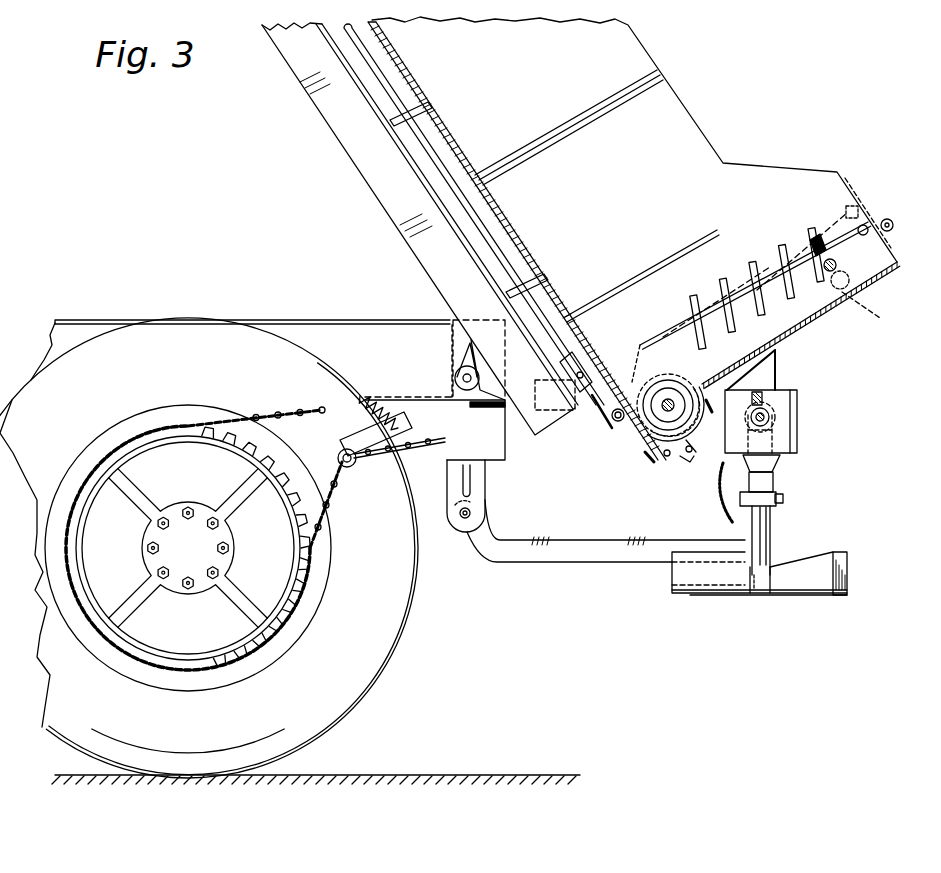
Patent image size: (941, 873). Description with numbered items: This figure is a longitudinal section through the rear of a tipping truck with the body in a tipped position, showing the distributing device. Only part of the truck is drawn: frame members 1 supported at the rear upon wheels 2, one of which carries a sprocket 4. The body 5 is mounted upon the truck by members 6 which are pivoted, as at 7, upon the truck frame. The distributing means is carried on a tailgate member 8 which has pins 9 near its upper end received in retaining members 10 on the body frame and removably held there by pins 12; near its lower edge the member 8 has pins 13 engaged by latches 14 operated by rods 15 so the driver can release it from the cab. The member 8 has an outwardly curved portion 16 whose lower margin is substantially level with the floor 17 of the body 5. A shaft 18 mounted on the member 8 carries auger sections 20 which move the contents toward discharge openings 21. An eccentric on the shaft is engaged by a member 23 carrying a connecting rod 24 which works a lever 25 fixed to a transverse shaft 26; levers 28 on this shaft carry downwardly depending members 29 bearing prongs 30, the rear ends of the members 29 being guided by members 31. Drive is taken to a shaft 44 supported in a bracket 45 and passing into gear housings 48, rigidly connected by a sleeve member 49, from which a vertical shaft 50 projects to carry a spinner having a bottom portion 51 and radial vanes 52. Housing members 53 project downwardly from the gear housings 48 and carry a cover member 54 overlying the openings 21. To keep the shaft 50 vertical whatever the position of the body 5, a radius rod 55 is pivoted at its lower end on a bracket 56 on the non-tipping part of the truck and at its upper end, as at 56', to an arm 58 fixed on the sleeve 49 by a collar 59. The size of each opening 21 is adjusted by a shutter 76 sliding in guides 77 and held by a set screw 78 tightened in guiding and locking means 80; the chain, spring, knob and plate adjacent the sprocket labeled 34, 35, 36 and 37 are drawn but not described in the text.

The frame members 1 is at (316, 320).
The wheels 2 is at (390, 668).
The sprocket 4 is at (280, 462).
The body 5 is at (683, 122).
The members 6 is at (458, 356).
The pivot 7 is at (455, 378).
The member 8 is at (831, 305).
The pins 9 is at (861, 228).
The retaining members 10 is at (891, 242).
The pins 12 is at (894, 222).
The pins 13 is at (605, 425).
The latches 14 is at (622, 432).
The rods 15 is at (442, 175).
The curved portion 16 is at (685, 460).
The floor 17 is at (441, 125).
The shaft 18 is at (660, 398).
The auger sections 20 is at (650, 396).
The discharge openings 21 is at (663, 452).
The member 23 is at (641, 433).
The connecting rod 24 is at (880, 318).
The lever 25 is at (850, 295).
The shaft 26 is at (836, 267).
The levers 28 is at (826, 244).
The members 29 is at (777, 263).
The prongs 30 is at (722, 280).
The members 31 is at (673, 332).
The drive chain 34 is at (268, 412).
The plate 35 is at (387, 493).
The adjusting knob 36 is at (346, 468).
The spring 37 is at (396, 392).
The shaft 44 is at (770, 415).
The bracket 45 is at (777, 372).
The gear housings 48 is at (797, 424).
The member 49 is at (770, 398).
The vertical shaft 50 is at (770, 522).
The bottom portion 51 is at (810, 594).
The vanes 52 is at (847, 562).
The housing members 53 is at (778, 462).
The cover member 54 is at (731, 508).
The radius rod 55 is at (605, 556).
The bracket 56 is at (791, 553).
The pivot 56' is at (495, 496).
The arm 58 is at (748, 532).
The collar 59 is at (783, 428).
The shutter 76 is at (667, 456).
The guides 77 is at (648, 458).
The set screw 78 is at (692, 449).
The guiding and locking means 80 is at (692, 450).